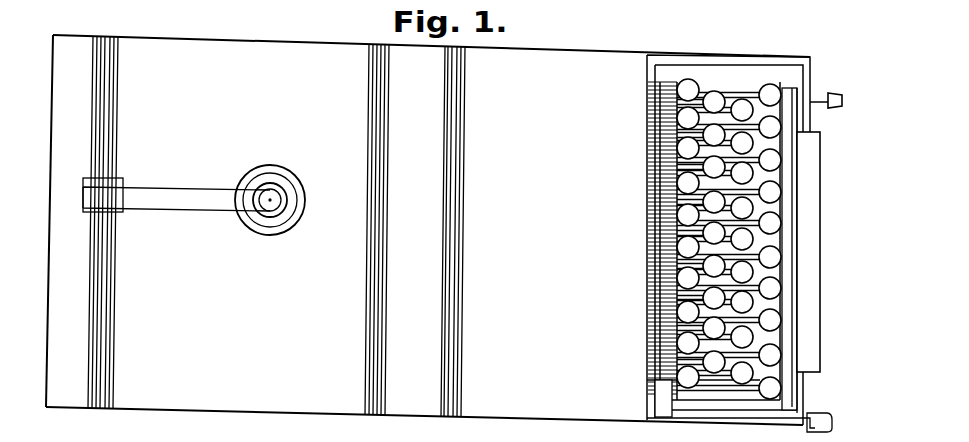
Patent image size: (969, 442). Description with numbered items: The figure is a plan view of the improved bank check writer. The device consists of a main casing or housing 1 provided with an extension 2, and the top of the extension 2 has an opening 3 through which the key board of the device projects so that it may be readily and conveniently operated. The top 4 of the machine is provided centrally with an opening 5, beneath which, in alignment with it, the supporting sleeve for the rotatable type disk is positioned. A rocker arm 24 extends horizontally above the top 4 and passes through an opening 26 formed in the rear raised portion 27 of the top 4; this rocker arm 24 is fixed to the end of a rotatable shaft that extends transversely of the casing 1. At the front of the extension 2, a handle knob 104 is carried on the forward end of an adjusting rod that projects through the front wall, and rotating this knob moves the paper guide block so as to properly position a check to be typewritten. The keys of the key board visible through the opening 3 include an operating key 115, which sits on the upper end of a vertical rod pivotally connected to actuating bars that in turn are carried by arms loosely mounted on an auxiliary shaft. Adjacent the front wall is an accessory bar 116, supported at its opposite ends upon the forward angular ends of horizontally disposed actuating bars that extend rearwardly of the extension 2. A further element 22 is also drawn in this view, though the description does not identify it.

The main casing 1 is at (428, 230).
The extension 2 is at (500, 231).
The opening 3 is at (707, 65).
The top 4 is at (355, 229).
The opening 5 is at (282, 163).
The bottom bar 22 is at (773, 407).
The rocker arm 24 is at (203, 190).
The opening 26 is at (118, 177).
The rear raised portion 27 is at (83, 398).
The handle knob 104 is at (829, 93).
The operating key 115 is at (737, 384).
The accessory bar 116 is at (812, 360).